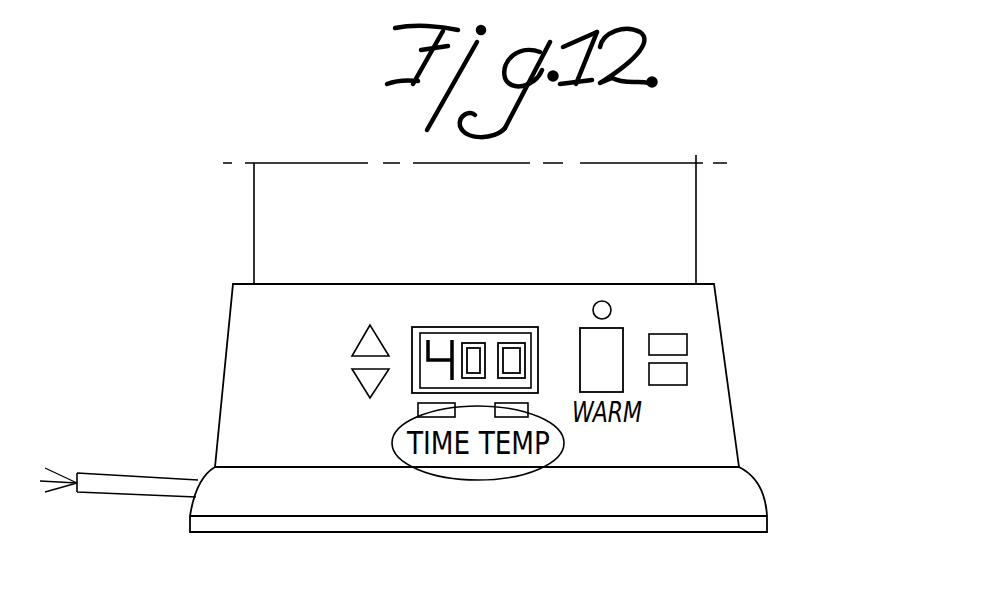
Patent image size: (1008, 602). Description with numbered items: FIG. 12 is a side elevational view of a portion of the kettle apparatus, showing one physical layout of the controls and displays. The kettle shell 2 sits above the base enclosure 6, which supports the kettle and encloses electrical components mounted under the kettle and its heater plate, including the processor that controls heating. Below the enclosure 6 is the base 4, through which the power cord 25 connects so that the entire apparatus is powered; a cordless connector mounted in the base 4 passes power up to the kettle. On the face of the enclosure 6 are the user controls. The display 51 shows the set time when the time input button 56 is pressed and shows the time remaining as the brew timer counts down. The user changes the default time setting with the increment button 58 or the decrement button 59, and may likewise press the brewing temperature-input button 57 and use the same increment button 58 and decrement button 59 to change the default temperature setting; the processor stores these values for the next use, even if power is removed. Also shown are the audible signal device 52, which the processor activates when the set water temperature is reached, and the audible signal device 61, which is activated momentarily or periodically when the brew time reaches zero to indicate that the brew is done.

The kettle shell 2 is at (267, 211).
The enclosure 6 is at (243, 332).
The base 4 is at (740, 495).
The power cord 25 is at (145, 483).
The display 51 is at (473, 338).
The increment button 58 is at (370, 325).
The decrement button 59 is at (375, 380).
The time input button 56 is at (400, 462).
The brewing temperature-input button 57 is at (557, 456).
The audible signal device 52 is at (686, 344).
The audible signal device 61 is at (682, 373).